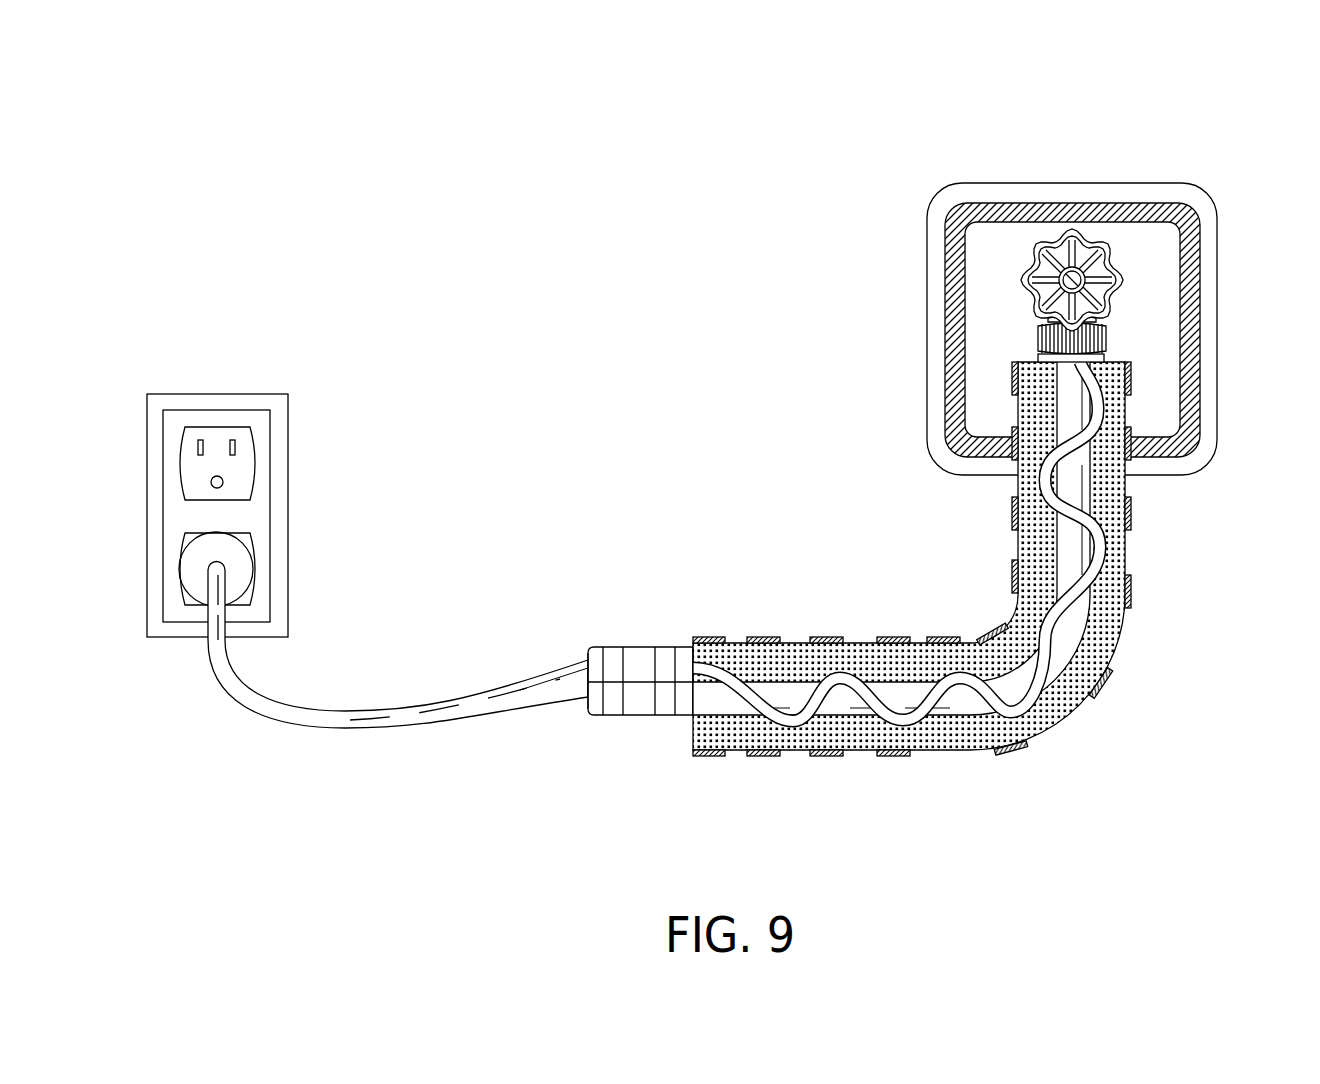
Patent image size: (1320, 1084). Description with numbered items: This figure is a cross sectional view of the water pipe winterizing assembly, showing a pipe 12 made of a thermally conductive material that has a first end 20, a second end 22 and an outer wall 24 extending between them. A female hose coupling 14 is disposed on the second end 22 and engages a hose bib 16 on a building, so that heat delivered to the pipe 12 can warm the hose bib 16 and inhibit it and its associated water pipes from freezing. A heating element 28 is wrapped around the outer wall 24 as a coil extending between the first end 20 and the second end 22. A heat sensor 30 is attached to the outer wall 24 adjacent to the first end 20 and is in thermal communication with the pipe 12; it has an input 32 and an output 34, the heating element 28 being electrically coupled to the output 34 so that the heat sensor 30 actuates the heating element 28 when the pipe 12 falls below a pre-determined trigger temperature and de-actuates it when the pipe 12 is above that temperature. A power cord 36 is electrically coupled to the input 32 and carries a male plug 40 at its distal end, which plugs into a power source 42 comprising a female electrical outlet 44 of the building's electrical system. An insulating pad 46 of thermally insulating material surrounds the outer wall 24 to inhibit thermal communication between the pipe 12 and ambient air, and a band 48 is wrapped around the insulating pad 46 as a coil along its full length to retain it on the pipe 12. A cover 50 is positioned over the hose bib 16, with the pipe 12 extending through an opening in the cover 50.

The pipe 12 is at (960, 703).
The female hose coupling 14 is at (1105, 340).
The hose bib 16 is at (1093, 232).
The first end 20 is at (577, 703).
The second end 22 is at (1040, 326).
The outer wall 24 is at (1073, 508).
The heating element 28 is at (1073, 597).
The heat sensor 30 is at (638, 650).
The input 32 is at (585, 656).
The output 34 is at (697, 660).
The power cord 36 is at (357, 742).
The male plug 40 is at (247, 572).
The power source 42 is at (290, 395).
The female electrical outlet 44 is at (216, 430).
The insulating pad 46 is at (857, 735).
The band 48 is at (947, 640).
The cover 50 is at (932, 200).